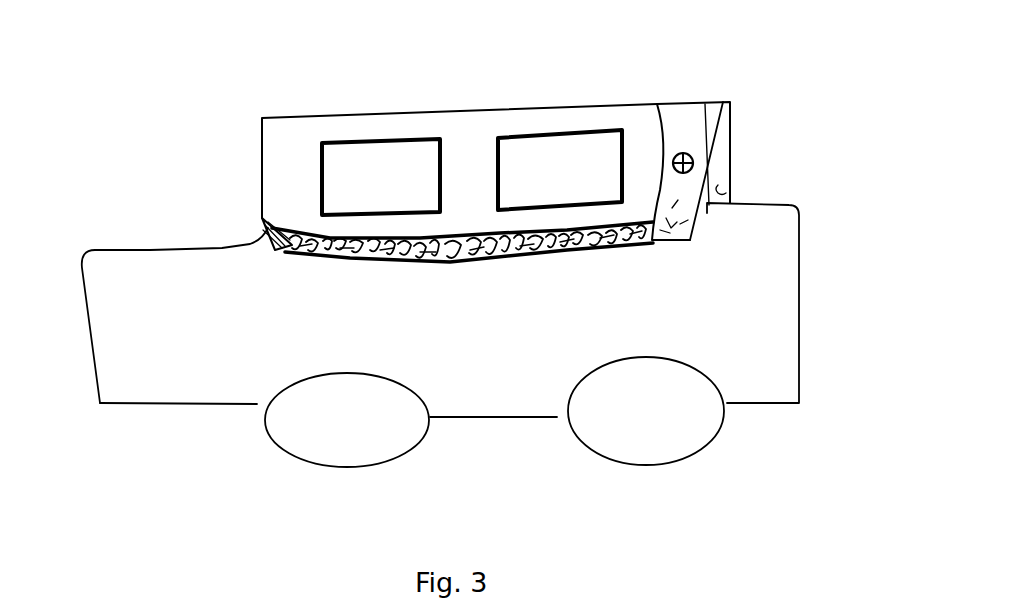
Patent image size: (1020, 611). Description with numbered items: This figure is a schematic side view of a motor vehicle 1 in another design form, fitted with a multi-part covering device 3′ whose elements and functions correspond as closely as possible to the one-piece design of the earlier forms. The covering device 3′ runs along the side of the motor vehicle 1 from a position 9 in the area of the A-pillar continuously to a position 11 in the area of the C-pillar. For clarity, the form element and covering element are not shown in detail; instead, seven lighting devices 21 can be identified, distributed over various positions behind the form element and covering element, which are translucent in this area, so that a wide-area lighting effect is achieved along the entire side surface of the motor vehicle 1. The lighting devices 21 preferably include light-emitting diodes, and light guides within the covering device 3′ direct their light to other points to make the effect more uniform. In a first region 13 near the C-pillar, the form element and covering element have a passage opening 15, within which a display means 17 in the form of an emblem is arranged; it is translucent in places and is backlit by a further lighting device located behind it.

The motor vehicle 1 is at (150, 132).
The multi-part covering device 3′ is at (272, 218).
The position in the area of the A-pillar 9 is at (230, 244).
The position in the area of the C-pillar 11 is at (736, 197).
The first region 13 is at (688, 136).
The passage opening 15 is at (715, 127).
The display means 17 is at (694, 163).
The lighting device 21 is at (290, 253).